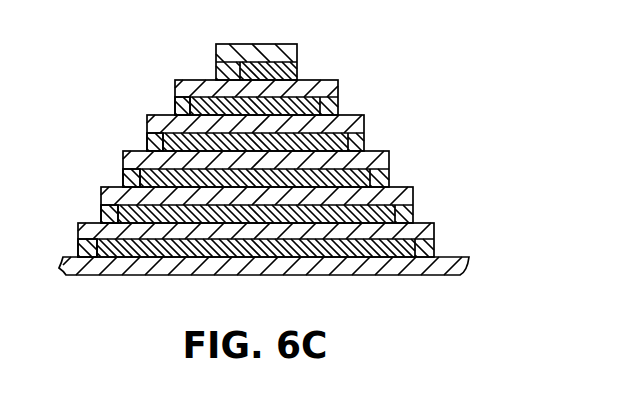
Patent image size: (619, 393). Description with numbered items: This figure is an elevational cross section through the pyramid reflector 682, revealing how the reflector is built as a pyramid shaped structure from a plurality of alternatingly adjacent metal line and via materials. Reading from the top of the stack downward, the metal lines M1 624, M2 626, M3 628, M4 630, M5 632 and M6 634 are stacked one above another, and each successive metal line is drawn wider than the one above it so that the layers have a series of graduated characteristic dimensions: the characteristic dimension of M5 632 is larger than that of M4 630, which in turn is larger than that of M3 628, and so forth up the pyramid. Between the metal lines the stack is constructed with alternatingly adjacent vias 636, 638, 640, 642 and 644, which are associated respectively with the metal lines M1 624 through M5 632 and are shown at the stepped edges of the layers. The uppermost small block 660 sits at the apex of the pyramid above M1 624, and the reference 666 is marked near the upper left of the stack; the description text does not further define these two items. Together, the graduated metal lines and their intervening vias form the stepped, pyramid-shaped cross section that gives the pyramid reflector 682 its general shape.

The pyramid reflector 682 is at (406, 19).
The stack 666 is at (272, 139).
The top layer 660 is at (297, 46).
The M1 metal line 624 is at (339, 82).
The M2 metal line 626 is at (365, 117).
The M3 metal line 628 is at (390, 153).
The M4 metal line 630 is at (414, 189).
The M5 metal line 632 is at (435, 223).
The M6 metal line 634 is at (470, 259).
The via 636 is at (174, 107).
The via 638 is at (147, 143).
The via 640 is at (123, 179).
The via 642 is at (100, 214).
The via 644 is at (77, 250).